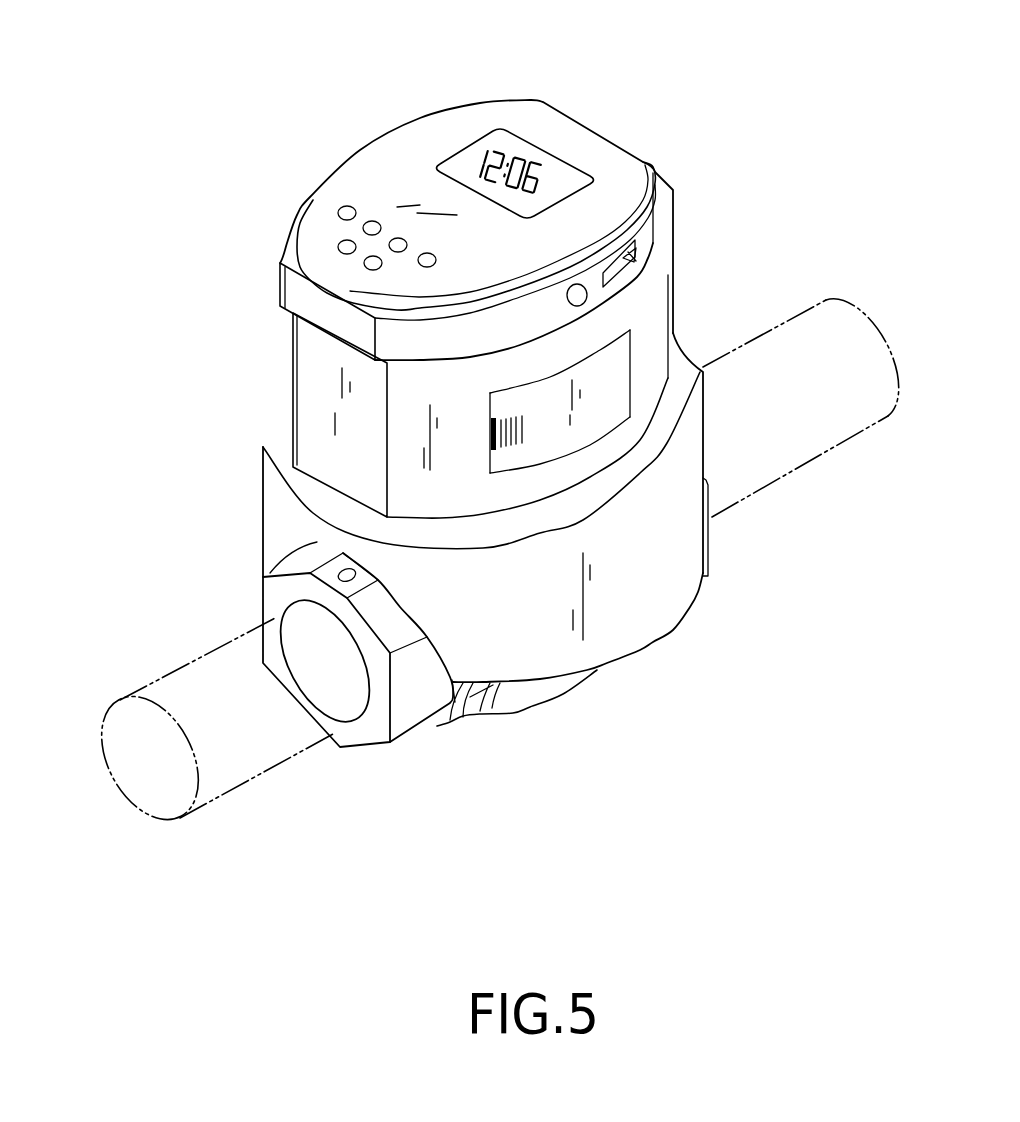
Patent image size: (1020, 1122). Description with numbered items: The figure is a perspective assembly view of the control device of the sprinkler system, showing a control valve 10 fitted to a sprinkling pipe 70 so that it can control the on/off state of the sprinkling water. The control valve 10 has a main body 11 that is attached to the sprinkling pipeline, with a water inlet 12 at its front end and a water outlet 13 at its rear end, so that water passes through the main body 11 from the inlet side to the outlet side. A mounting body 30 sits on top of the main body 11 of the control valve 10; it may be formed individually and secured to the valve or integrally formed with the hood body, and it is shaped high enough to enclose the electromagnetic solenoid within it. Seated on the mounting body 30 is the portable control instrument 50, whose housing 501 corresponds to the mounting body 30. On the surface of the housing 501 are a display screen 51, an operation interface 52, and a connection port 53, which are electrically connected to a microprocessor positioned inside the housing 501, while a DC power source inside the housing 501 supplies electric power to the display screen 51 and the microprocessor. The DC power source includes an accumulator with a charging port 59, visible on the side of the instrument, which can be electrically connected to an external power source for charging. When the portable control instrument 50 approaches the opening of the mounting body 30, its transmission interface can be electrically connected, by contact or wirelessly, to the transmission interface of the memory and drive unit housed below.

The control valve 10 is at (583, 722).
The main body 11 is at (640, 611).
The water inlet 12 is at (418, 707).
The water outlet 13 is at (710, 546).
The mounting body 30 is at (312, 386).
The portable control instrument 50 is at (331, 122).
The housing 501 is at (280, 287).
The display screen 51 is at (484, 148).
The operation interface 52 is at (372, 226).
The connection port 53 is at (638, 255).
The charging port 59 is at (575, 290).
The sprinkling pipe 70 is at (183, 665).